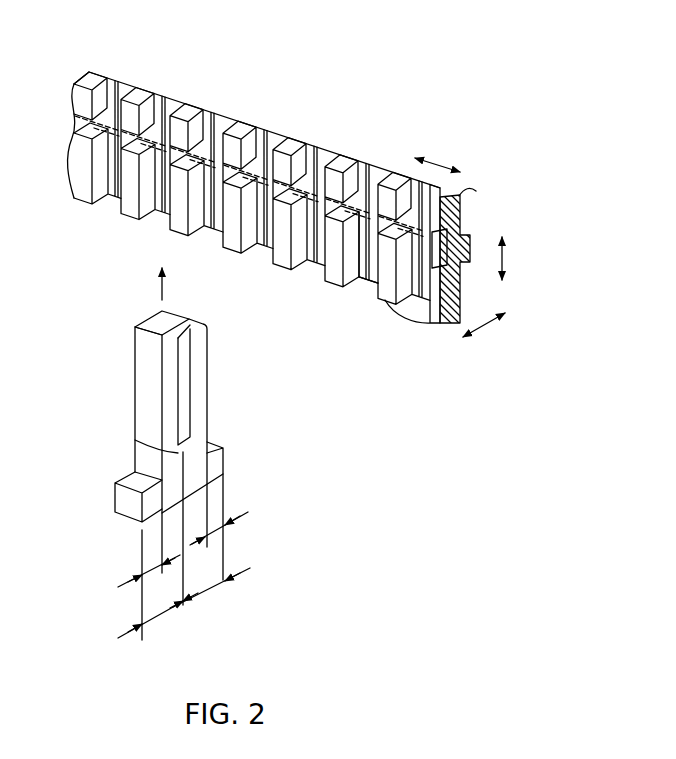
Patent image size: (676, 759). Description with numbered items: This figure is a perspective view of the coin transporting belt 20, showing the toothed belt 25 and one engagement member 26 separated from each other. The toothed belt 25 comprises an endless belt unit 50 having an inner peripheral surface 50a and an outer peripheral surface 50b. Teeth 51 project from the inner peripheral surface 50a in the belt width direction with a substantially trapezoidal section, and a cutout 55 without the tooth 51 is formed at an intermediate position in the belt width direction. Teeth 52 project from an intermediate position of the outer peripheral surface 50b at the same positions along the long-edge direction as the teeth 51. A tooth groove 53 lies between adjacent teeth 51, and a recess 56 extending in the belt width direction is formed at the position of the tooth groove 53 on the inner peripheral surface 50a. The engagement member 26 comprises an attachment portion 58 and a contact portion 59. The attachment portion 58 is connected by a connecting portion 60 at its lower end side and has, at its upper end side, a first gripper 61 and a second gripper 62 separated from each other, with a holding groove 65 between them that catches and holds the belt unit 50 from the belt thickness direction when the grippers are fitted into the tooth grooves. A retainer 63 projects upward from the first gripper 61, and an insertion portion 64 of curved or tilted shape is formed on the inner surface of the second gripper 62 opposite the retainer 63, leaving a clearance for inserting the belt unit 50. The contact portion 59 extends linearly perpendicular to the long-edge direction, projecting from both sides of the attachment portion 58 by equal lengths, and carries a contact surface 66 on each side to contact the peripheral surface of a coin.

The coin transporting belt 20 is at (233, 47).
The toothed belt 25 is at (148, 88).
The engagement member 26 is at (135, 385).
The belt unit 50 is at (256, 135).
The inner peripheral surface 50a is at (270, 148).
The outer peripheral surface 50b is at (312, 149).
The tooth 51 is at (391, 318).
The tooth 52 is at (461, 199).
The tooth groove 53 is at (365, 293).
The cutout 55 is at (372, 228).
The recess 56 is at (366, 177).
The attachment portion 58 is at (207, 392).
The contact portion 59 is at (223, 452).
The connecting portion 60 is at (140, 445).
The first gripper 61 is at (143, 357).
The second gripper 62 is at (207, 370).
The retainer 63 is at (170, 317).
The insertion portion 64 is at (187, 345).
The holding groove 65 is at (185, 415).
The contact surface 66 is at (217, 470).